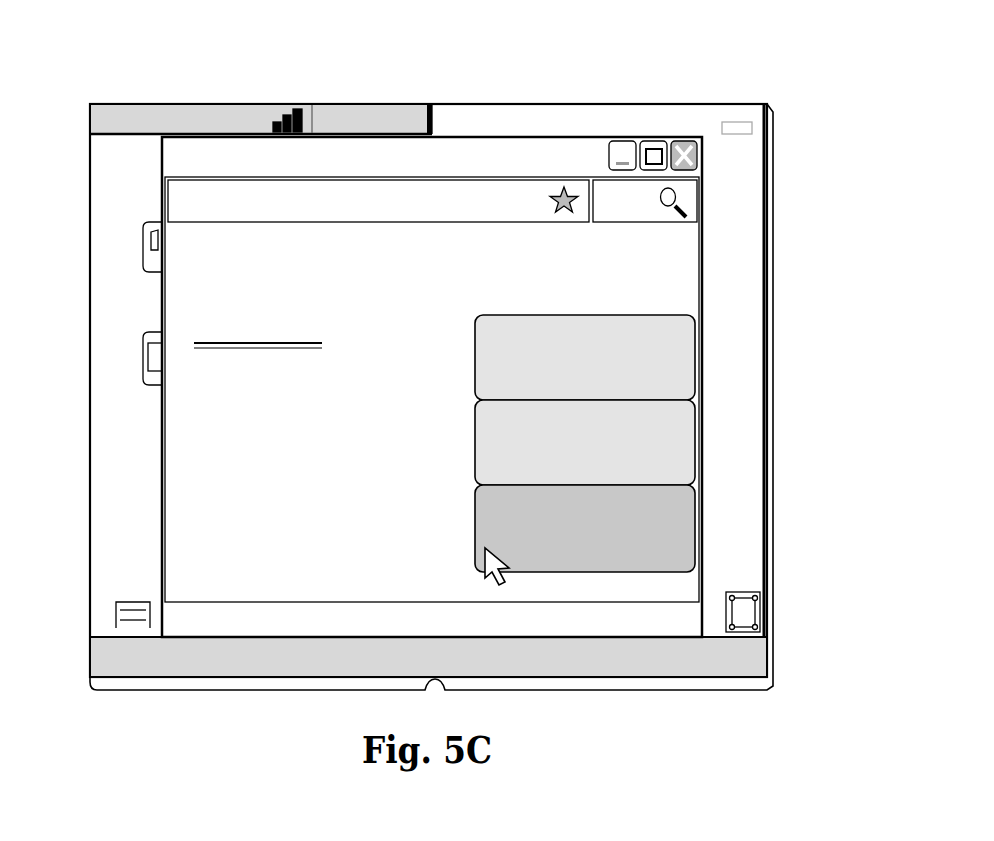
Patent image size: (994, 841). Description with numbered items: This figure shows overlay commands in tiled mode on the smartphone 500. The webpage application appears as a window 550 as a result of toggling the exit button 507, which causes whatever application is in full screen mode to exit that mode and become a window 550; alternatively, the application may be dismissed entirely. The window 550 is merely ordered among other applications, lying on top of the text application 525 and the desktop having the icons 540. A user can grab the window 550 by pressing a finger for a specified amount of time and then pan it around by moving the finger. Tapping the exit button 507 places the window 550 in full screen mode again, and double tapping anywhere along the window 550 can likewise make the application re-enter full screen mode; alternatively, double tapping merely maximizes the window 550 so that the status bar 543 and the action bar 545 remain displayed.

The smartphone 500 is at (771, 67).
The status bar 543 is at (331, 118).
The window 550 is at (545, 162).
The text application 525 is at (758, 239).
The icons 540 is at (150, 215).
The action bar 545 is at (116, 613).
The exit button 507 is at (760, 594).